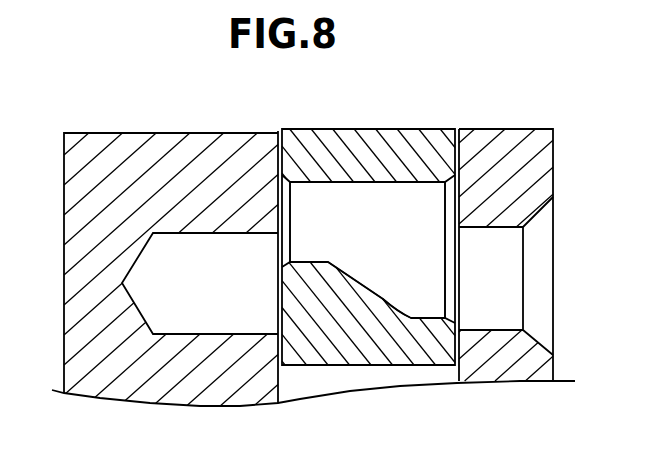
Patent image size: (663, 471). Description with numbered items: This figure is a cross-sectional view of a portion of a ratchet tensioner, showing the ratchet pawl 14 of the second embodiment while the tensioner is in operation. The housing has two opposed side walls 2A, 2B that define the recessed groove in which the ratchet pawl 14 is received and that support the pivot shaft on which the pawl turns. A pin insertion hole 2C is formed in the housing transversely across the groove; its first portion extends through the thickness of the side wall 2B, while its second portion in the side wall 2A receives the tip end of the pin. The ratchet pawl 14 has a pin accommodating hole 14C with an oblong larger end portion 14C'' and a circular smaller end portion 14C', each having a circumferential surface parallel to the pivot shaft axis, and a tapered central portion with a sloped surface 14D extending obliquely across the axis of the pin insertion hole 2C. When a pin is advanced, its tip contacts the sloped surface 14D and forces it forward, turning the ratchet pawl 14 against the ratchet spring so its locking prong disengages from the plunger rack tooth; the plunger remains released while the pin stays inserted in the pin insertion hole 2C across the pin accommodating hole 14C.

The side wall 2A is at (185, 153).
The side wall 2B is at (512, 160).
The pin insertion hole 2C is at (197, 310).
The ratchet pawl 14 is at (373, 147).
The pin accommodating hole 14C is at (370, 144).
The circular smaller end portion 14C' is at (311, 173).
The oblong larger end portion 14C'' is at (459, 313).
The sloped surface 14D is at (369, 297).